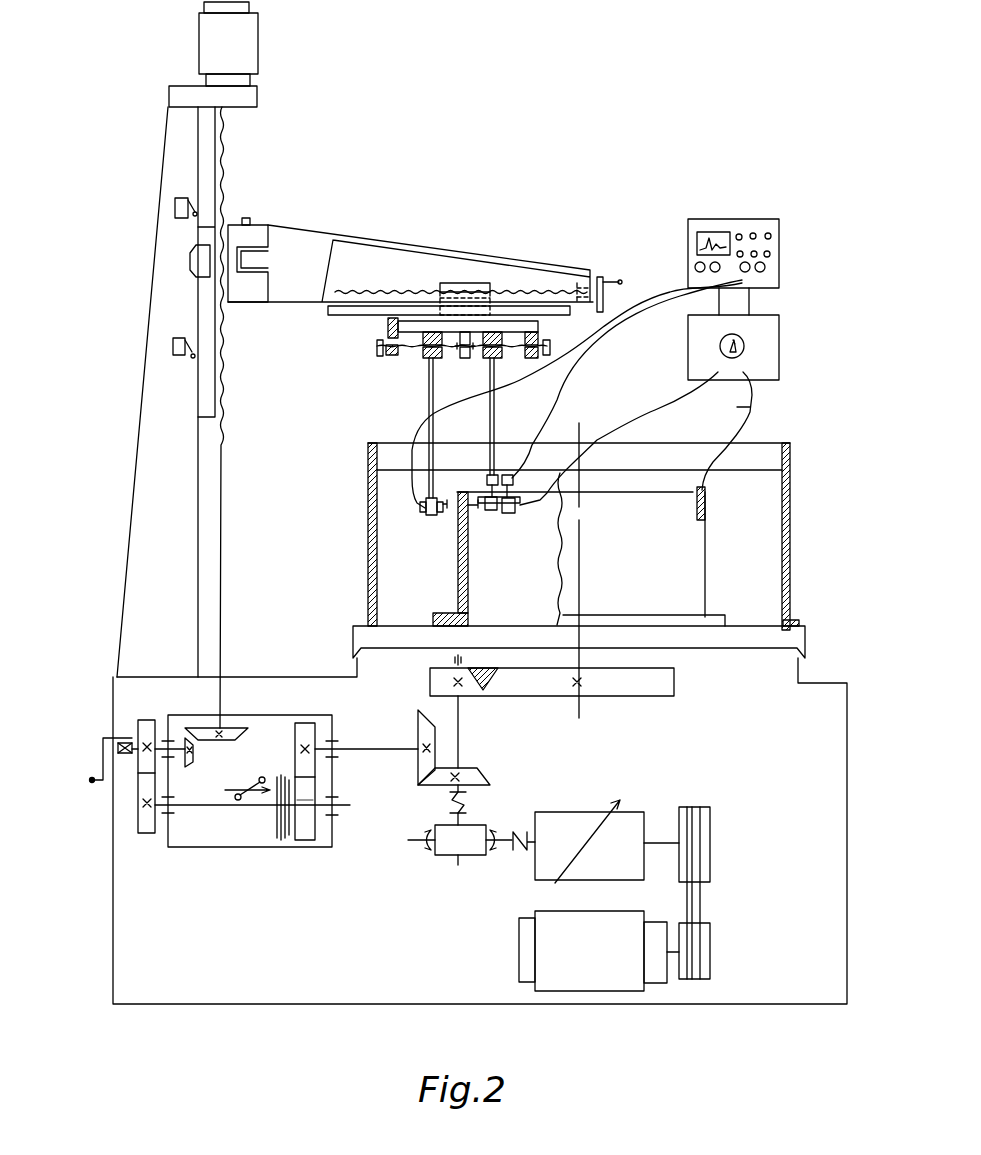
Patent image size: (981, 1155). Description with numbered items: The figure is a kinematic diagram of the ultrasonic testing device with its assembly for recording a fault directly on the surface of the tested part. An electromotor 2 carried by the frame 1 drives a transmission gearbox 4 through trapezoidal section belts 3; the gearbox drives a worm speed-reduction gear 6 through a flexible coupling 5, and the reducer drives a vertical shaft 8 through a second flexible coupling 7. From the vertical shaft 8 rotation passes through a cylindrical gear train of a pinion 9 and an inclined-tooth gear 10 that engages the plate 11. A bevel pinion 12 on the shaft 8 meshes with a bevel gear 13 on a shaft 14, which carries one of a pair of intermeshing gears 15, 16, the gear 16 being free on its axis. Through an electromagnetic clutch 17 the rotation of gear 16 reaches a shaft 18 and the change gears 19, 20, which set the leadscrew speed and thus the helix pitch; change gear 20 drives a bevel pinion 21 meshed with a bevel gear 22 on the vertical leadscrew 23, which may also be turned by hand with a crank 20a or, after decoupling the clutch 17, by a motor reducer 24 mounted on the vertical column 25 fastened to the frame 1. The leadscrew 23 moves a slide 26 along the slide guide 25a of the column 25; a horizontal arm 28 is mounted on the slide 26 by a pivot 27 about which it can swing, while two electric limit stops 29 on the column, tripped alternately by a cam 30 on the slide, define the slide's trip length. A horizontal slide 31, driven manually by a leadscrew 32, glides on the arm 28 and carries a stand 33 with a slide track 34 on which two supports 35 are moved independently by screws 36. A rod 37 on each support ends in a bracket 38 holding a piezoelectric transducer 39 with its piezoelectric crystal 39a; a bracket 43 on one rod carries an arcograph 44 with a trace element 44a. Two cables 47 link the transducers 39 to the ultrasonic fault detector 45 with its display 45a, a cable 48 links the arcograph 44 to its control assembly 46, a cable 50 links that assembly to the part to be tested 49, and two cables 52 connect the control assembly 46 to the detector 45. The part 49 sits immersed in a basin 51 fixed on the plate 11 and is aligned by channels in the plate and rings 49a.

The frame 1 is at (835, 982).
The electromotor 2 is at (540, 948).
The trapezoidal section belts 3 is at (700, 905).
The transmission gearbox 4 is at (628, 815).
The flexible coupling 5 is at (518, 852).
The worm speed-reduction gear 6 is at (448, 852).
The flexible coupling 7 is at (463, 808).
The vertical shaft 8 is at (462, 737).
The pinion 9 is at (442, 690).
The gear 10 is at (672, 692).
The plate 11 is at (800, 640).
The bevel pinion 12 is at (435, 773).
The bevel gear 13 is at (430, 730).
The shaft 14 is at (357, 745).
The gear 15 is at (305, 735).
The gear 16 is at (307, 833).
The electromagnetic clutch 17 is at (277, 828).
The shaft 18 is at (207, 808).
The change gear 19 is at (150, 820).
The change gear 20 is at (147, 733).
The crank 20a is at (103, 760).
The bevel pinion 21 is at (187, 742).
The bevel gear 22 is at (233, 730).
The leadscrew 23 is at (220, 632).
The motor reducer 24 is at (257, 56).
The vertical column 25 is at (148, 393).
The slide guide 25a is at (210, 399).
The slide 26 is at (262, 236).
The pivot 27 is at (249, 221).
The horizontal arm 28 is at (285, 297).
The electric limit stops 29 is at (175, 205).
The cam 30 is at (190, 262).
The horizontal slide 31 is at (470, 282).
The leadscrew 32 is at (530, 290).
The stand 33 is at (388, 325).
The slide track 34 is at (538, 323).
The supports 35 is at (490, 360).
The screws 36 is at (417, 350).
The rod 37 is at (433, 417).
The bracket 38 is at (425, 517).
The piezoelectric transducer 39 is at (440, 517).
The piezoelectric crystal 39a is at (458, 489).
The bracket 43 is at (513, 478).
The arcograph 44 is at (517, 508).
The trace element 44a is at (473, 507).
The ultrasonic fault detector 45 is at (775, 228).
The display screen 45a is at (720, 240).
The control assembly 46 is at (773, 348).
The cables 47 is at (663, 293).
The cable 48 is at (643, 405).
The part to be tested 49 is at (705, 560).
The rings 49a is at (432, 613).
The cable 50 is at (727, 431).
The basin 51 is at (785, 520).
The cables 52 is at (752, 300).